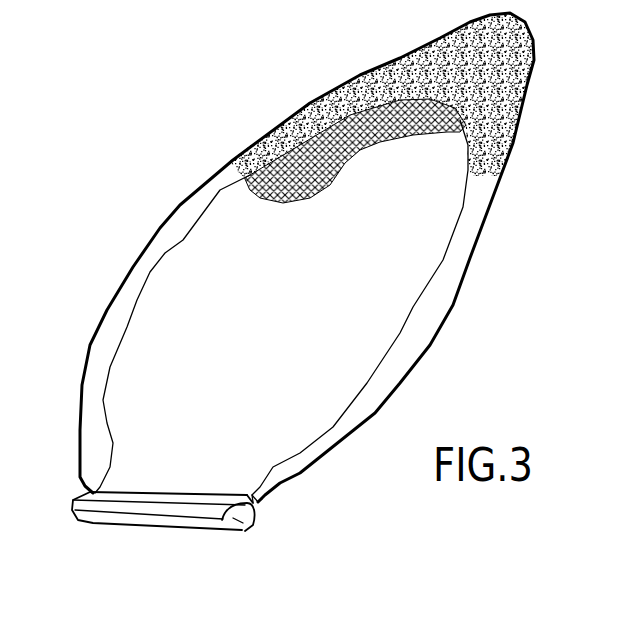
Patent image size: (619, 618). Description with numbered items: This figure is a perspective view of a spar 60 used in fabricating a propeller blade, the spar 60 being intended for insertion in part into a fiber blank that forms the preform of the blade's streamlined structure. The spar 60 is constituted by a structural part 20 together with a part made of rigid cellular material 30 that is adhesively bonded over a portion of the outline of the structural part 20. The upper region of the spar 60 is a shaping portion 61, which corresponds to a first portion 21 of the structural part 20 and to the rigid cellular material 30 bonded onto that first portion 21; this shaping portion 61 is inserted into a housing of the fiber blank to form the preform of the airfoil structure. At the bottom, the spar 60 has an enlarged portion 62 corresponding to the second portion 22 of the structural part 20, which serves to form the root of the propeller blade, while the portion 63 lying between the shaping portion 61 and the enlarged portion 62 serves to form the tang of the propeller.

The spar 60 is at (175, 143).
The shaping portion 61 is at (511, 333).
The part made of rigid cellular material 30 is at (467, 222).
The first portion of the structural part 21 is at (380, 313).
The structural part 20 is at (280, 314).
The second portion of the structural part 22 is at (77, 500).
The enlarged portion 62 is at (247, 532).
The portion lying between the shaping portion and the enlarged portion 63 is at (253, 502).